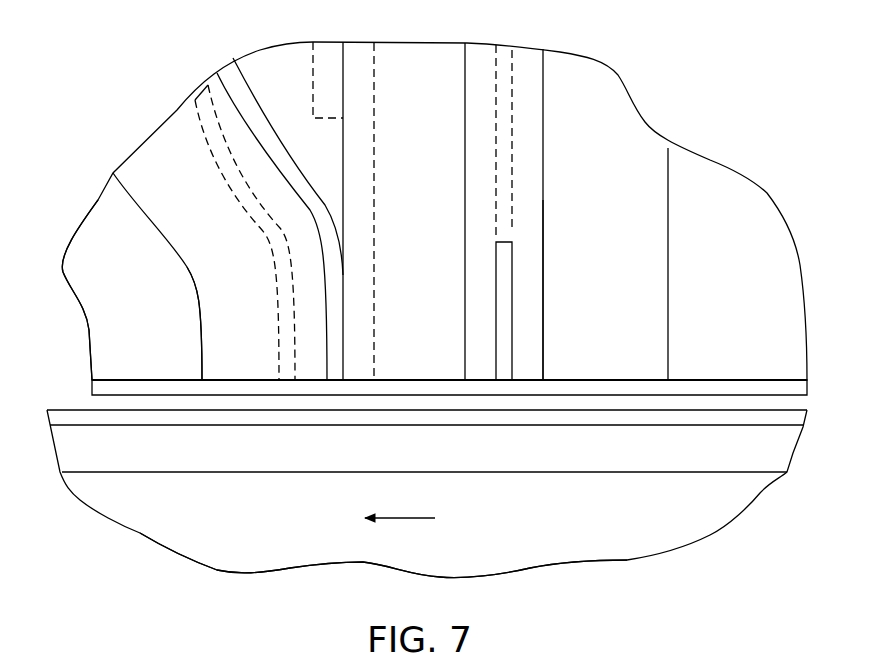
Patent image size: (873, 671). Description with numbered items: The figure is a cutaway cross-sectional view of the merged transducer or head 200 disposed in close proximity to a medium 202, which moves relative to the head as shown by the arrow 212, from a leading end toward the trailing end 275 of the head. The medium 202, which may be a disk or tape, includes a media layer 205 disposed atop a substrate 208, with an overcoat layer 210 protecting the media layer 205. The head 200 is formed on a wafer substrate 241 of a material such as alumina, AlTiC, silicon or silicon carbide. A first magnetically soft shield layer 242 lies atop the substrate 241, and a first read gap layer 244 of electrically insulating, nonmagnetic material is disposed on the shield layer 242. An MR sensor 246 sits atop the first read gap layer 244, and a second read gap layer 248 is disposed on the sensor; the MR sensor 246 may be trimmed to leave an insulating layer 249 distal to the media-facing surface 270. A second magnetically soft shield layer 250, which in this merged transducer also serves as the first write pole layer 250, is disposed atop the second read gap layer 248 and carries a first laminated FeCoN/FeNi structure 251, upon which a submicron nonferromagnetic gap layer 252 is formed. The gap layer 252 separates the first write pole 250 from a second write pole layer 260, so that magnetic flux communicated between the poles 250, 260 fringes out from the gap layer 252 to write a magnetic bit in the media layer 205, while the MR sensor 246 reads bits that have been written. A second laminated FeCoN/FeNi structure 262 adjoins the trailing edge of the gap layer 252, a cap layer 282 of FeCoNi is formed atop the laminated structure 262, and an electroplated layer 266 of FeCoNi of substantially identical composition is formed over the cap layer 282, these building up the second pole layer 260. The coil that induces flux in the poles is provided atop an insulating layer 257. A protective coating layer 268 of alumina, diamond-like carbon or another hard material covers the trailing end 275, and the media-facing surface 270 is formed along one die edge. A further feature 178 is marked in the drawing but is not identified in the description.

The merged transducer head 200 is at (186, 60).
The medium 202 is at (135, 566).
The media layer 205 is at (435, 472).
The substrate 208 is at (251, 516).
The overcoat layer 210 is at (148, 425).
The arrow 212 is at (397, 518).
The wafer substrate 241 is at (756, 329).
The first magnetically soft shield layer 242 is at (624, 253).
The first read gap layer 244 is at (543, 298).
The MR sensor 246 is at (503, 288).
The second read gap layer 248 is at (465, 227).
The insulating layer 249 is at (512, 163).
The second magnetically soft shield layer / first write pole layer 250 is at (467, 385).
The first laminated FeCoN/FeNi structure 251 is at (374, 163).
The nonferromagnetic gap layer 252 is at (340, 347).
The insulating layer 257 is at (325, 118).
The second write pole layer 260 is at (310, 385).
The second laminated FeCoN/FeNi structure 262 is at (283, 338).
The FeCoNi layer 266 is at (256, 291).
The protective coating layer 268 is at (146, 291).
The media-facing surface 270 is at (576, 401).
The trailing end 275 is at (87, 365).
The cap layer 282 is at (222, 188).
The boundary 178 is at (167, 380).